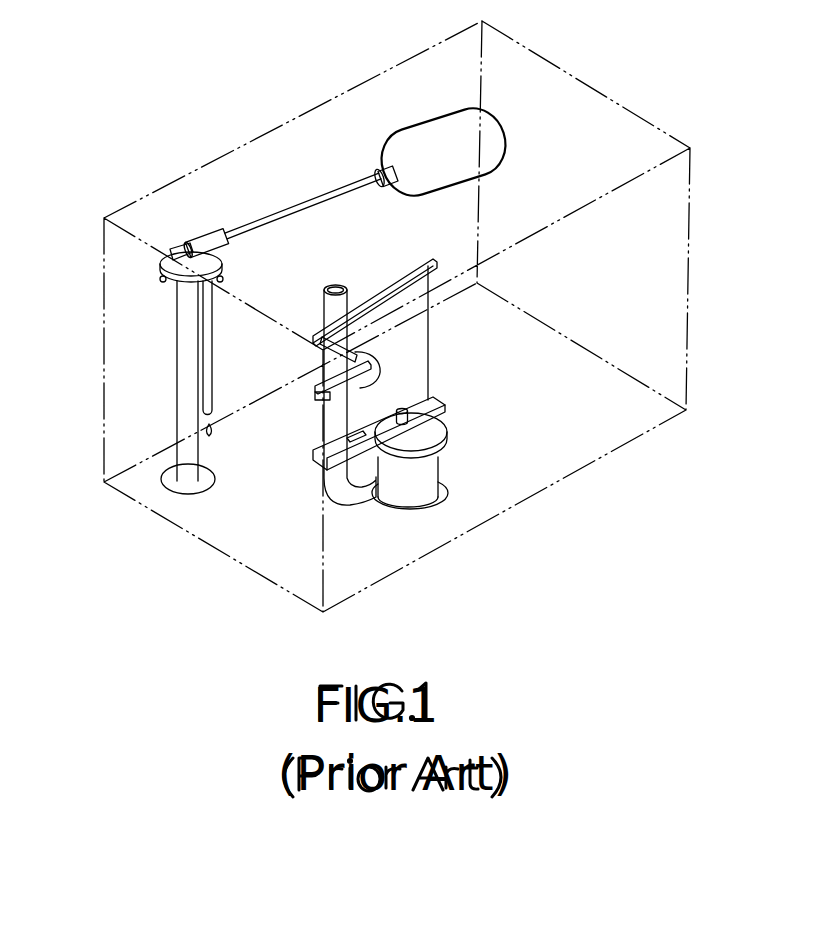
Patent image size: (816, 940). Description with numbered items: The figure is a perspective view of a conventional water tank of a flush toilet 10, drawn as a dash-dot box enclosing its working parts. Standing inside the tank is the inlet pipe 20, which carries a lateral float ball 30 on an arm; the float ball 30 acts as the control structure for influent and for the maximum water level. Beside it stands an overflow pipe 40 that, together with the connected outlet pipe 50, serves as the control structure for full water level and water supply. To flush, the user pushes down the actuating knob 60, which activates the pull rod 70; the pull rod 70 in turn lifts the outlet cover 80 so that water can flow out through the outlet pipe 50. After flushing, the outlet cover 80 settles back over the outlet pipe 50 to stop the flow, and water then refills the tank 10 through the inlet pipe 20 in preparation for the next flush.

The flush toilet water tank 10 is at (103, 362).
The inlet pipe 20 is at (197, 388).
The float ball 30 is at (435, 140).
The overflow pipe 40 is at (324, 312).
The outlet pipe 50 is at (426, 488).
The actuating knob 60 is at (322, 387).
The pull rod 70 is at (398, 290).
The outlet cover 80 is at (447, 437).